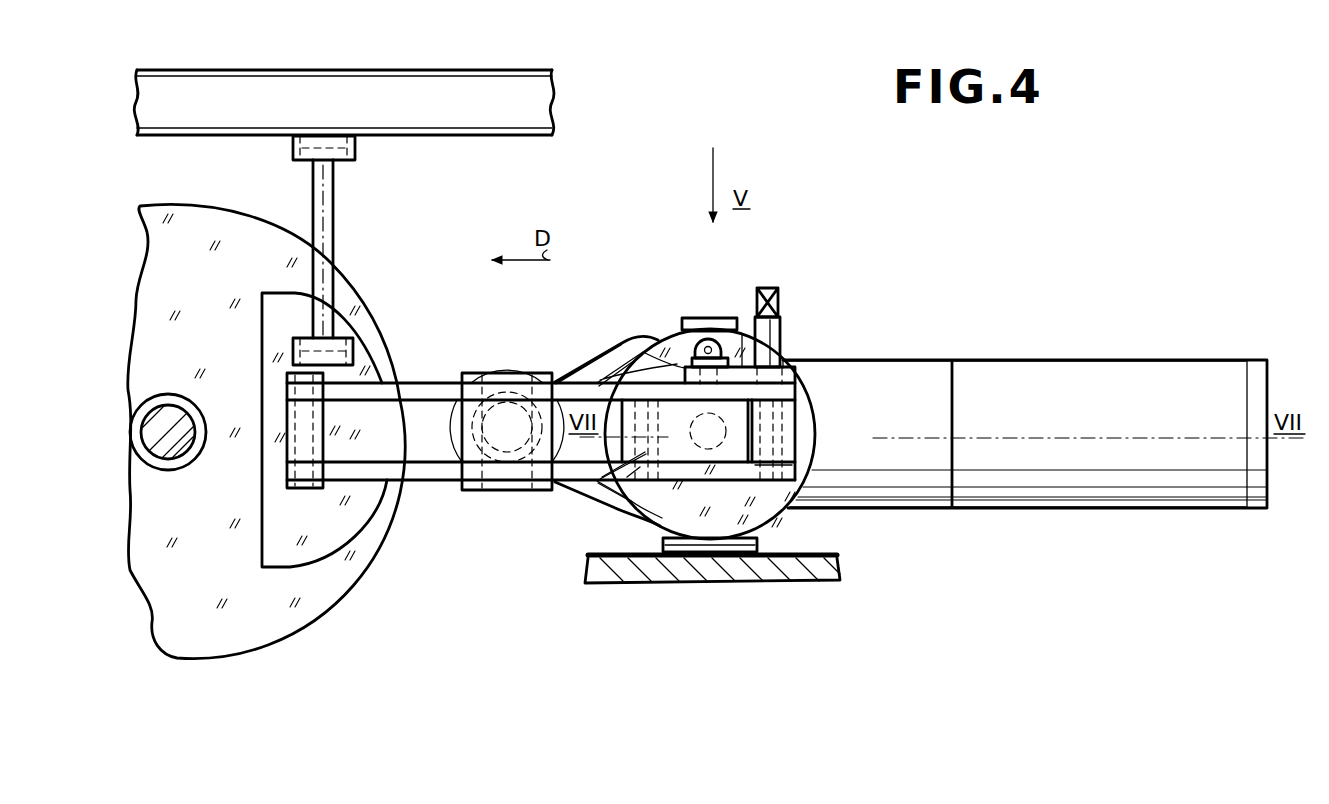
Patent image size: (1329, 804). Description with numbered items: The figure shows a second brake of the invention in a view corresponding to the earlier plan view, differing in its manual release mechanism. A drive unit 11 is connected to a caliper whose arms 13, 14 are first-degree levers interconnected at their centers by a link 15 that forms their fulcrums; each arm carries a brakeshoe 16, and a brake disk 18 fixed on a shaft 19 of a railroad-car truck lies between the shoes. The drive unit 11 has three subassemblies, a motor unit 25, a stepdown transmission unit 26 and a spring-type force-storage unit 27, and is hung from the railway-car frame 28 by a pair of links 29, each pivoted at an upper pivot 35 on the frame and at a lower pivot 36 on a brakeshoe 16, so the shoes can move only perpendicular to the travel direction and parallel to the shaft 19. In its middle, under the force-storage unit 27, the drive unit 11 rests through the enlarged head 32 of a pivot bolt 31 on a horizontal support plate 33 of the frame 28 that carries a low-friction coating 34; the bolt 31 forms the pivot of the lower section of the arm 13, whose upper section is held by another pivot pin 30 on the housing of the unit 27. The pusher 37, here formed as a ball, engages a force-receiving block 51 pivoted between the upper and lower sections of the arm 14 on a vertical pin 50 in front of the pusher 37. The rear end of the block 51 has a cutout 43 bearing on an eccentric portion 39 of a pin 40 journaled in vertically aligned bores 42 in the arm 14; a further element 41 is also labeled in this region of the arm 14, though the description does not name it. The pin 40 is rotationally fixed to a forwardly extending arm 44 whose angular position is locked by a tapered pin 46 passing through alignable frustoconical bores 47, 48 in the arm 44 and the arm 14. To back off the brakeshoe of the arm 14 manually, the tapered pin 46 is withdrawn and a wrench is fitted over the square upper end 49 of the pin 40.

The drive unit 11 is at (992, 352).
The arm 13 is at (602, 352).
The arm 14 is at (416, 430).
The link 15 is at (470, 378).
The brakeshoe 16 is at (313, 524).
The brake disk 18 is at (233, 232).
The shaft 19 is at (173, 438).
The motor unit 25 is at (1120, 357).
The stepdown transmission unit 26 is at (869, 358).
The spring-type force-storage unit 27 is at (664, 336).
The railway-car frame 28 is at (487, 95).
The link 29 is at (328, 220).
The pivot pin 30 is at (708, 317).
The pivot bolt 31 is at (762, 540).
The enlarged head 32 is at (742, 552).
The horizontal support plate 33 is at (695, 573).
The coating 34 is at (838, 556).
The upper pivot 35 is at (344, 158).
The pivot 36 is at (352, 340).
The pusher 37 is at (700, 390).
The eccentric portion 39 is at (778, 427).
The pin 40 is at (784, 333).
The block 41 is at (782, 374).
The bores 42 is at (774, 466).
The cutout 43 is at (784, 359).
The arm 44 is at (743, 362).
The tapered pin 46 is at (697, 345).
The frustoconical bore 47 is at (616, 372).
The frustoconical bore 48 is at (614, 521).
The square upper end 49 is at (777, 300).
The pin 50 is at (590, 493).
The force-receiving block 51 is at (738, 446).